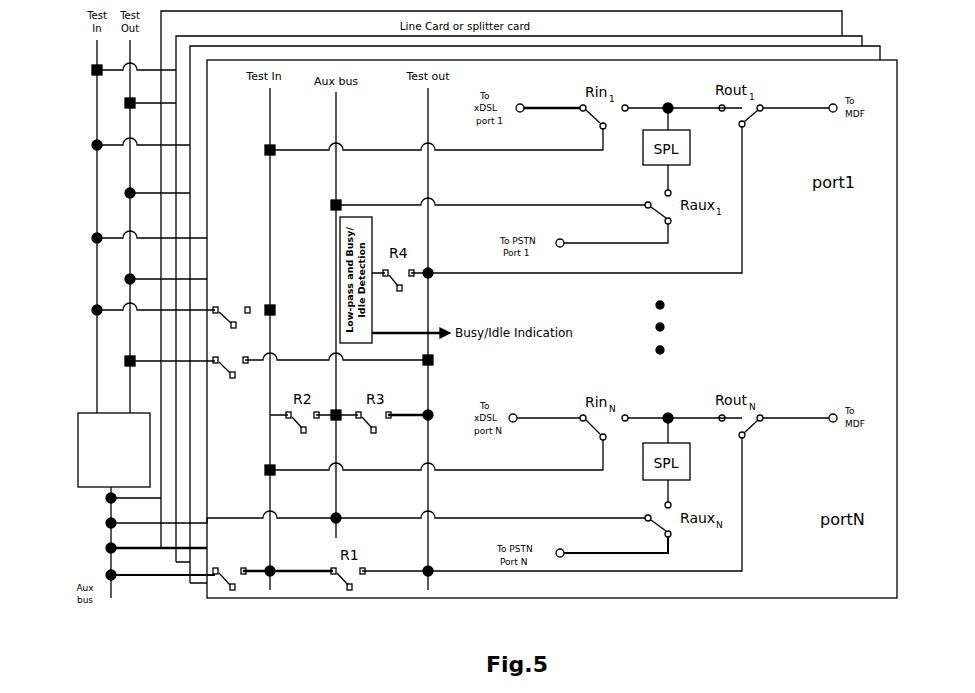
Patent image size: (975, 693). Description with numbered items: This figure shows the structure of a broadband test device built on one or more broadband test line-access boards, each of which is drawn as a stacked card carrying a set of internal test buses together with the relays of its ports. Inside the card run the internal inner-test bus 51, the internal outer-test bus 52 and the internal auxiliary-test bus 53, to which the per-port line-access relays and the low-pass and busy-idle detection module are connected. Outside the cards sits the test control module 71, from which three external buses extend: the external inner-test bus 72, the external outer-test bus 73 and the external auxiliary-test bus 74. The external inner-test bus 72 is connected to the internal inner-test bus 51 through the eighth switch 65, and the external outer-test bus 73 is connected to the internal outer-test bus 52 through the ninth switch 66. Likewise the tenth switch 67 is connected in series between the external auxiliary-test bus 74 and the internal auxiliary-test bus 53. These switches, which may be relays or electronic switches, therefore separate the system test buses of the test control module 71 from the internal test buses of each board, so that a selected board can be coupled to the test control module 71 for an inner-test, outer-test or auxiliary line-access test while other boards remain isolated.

The internal inner-test bus 51 is at (272, 595).
The internal outer-test bus 52 is at (430, 593).
The internal auxiliary-test bus 53 is at (340, 532).
The eighth switch 65 is at (251, 305).
The ninth switch 66 is at (251, 372).
The tenth switch 67 is at (233, 595).
The test control module 71 is at (85, 472).
The external inner-test bus 72 is at (97, 357).
The external outer-test bus 73 is at (128, 393).
The external auxiliary-test bus 74 is at (108, 568).